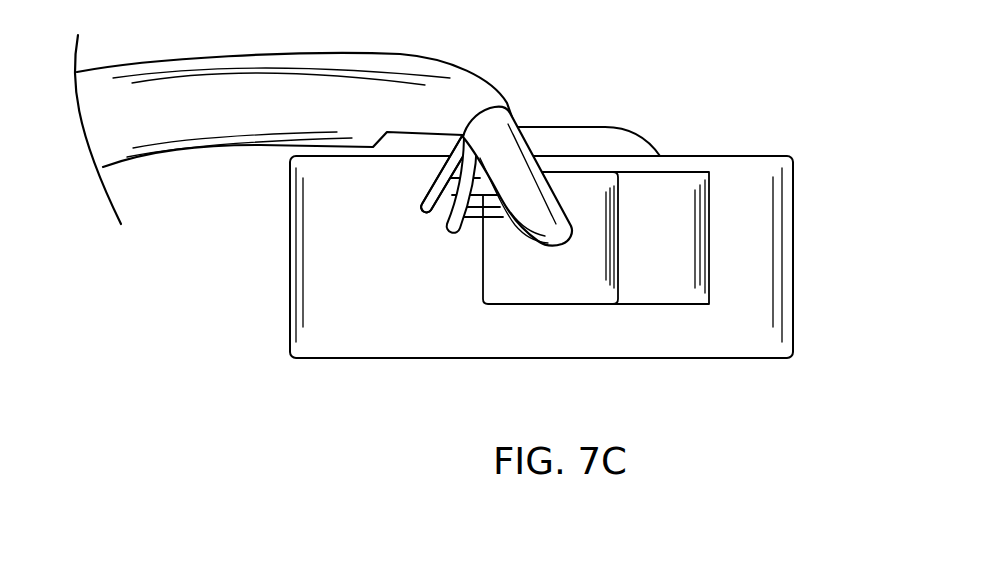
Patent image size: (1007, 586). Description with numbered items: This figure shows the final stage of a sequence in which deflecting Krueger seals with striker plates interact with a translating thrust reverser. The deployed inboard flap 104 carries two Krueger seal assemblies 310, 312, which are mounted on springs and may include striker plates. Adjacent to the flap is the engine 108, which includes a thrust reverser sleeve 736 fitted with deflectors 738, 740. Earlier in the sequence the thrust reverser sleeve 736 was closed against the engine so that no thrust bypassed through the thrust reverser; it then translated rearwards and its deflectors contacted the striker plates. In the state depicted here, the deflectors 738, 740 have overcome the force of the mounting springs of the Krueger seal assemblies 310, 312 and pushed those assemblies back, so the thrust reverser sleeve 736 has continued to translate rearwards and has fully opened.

The inboard flap 104 is at (541, 167).
The engine 108 is at (792, 155).
The Krueger seal assembly 310 is at (448, 235).
The Krueger seal assembly 312 is at (420, 205).
The thrust reverser sleeve 736 is at (562, 304).
The deflector 738 is at (421, 210).
The deflector 740 is at (481, 218).